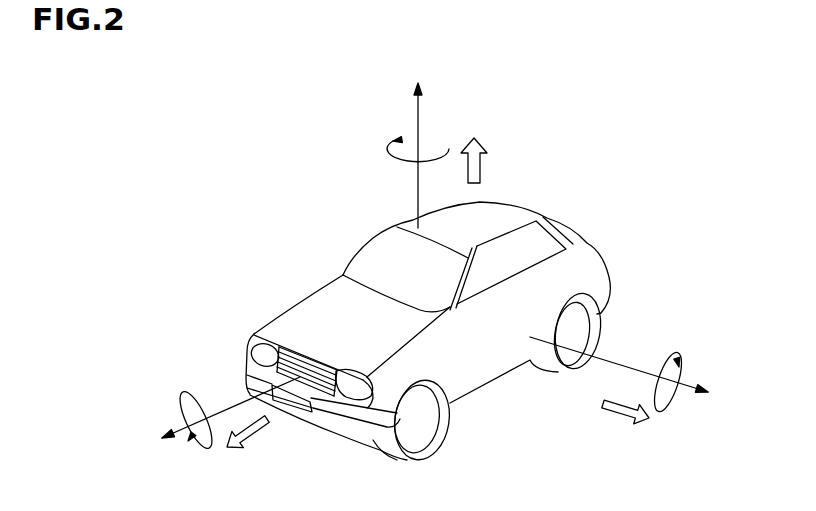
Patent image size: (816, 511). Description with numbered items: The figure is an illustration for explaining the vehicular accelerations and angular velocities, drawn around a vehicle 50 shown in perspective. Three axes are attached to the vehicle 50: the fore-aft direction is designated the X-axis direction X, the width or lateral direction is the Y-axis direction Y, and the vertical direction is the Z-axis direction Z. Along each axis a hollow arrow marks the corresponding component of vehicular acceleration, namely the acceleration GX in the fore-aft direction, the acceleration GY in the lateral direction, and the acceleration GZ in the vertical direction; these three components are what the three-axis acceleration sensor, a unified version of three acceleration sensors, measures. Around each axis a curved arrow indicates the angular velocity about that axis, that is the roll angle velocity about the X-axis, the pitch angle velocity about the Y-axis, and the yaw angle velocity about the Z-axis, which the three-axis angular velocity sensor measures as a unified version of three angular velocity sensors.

The vehicle 50 is at (567, 231).
The X-axis direction X is at (217, 420).
The Y-axis direction Y is at (634, 375).
The Z-axis direction Z is at (417, 140).
The acceleration in the X-axis direction GX is at (248, 452).
The acceleration in the Y-axis direction GY is at (640, 434).
The acceleration in the Z-axis direction GZ is at (480, 146).